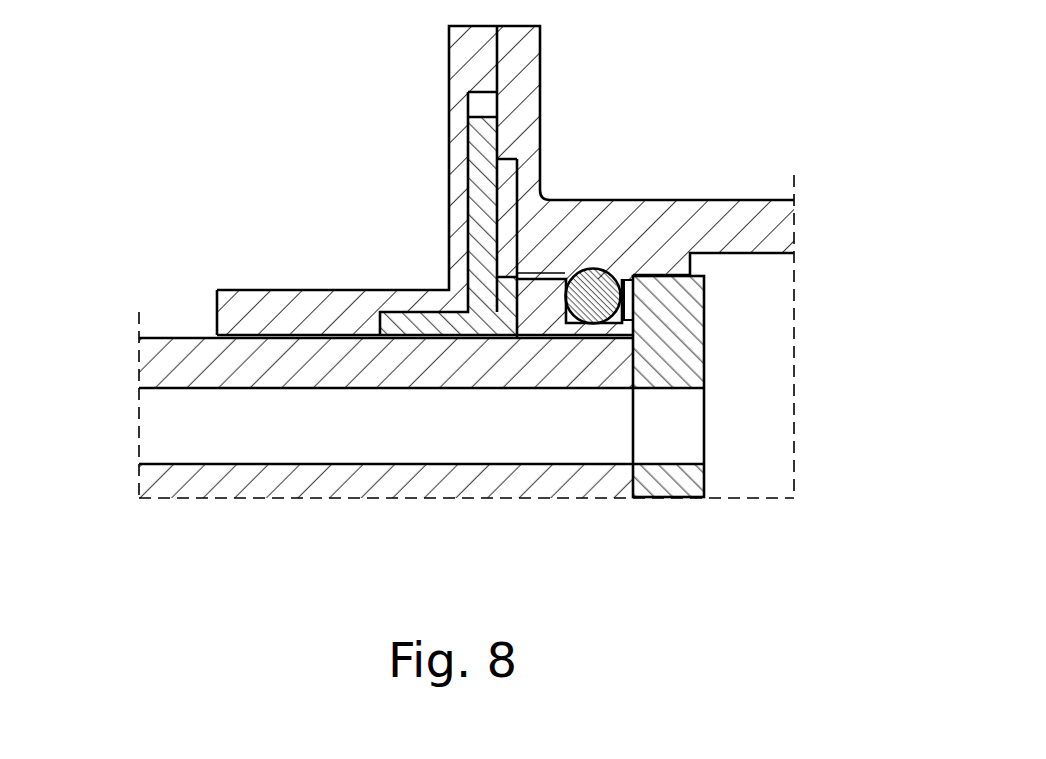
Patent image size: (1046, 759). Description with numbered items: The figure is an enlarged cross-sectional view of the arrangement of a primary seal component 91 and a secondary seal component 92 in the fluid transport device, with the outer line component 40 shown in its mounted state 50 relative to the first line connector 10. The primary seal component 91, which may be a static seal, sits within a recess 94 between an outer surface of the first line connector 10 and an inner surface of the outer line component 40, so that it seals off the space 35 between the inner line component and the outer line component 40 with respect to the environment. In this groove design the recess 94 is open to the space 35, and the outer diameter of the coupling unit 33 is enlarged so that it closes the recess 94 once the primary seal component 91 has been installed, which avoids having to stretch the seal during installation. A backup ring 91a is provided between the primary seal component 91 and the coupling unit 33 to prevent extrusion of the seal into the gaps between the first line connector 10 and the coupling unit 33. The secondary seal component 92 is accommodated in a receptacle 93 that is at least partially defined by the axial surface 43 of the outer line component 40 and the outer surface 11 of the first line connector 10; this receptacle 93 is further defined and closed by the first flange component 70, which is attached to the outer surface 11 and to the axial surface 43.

The first line connector 10 is at (163, 367).
The outer surface 11 is at (449, 323).
The coupling unit 33 is at (666, 330).
The space 35 is at (742, 378).
The outer line component 40 is at (588, 230).
The axial surface 43 is at (503, 215).
The mounted state 50 is at (798, 126).
The first flange component 70 is at (421, 122).
The primary seal component 91 is at (592, 304).
The backup ring 91a is at (628, 275).
The secondary seal component 92 is at (505, 155).
The receptacle 93 is at (531, 165).
The recess 94 is at (553, 296).